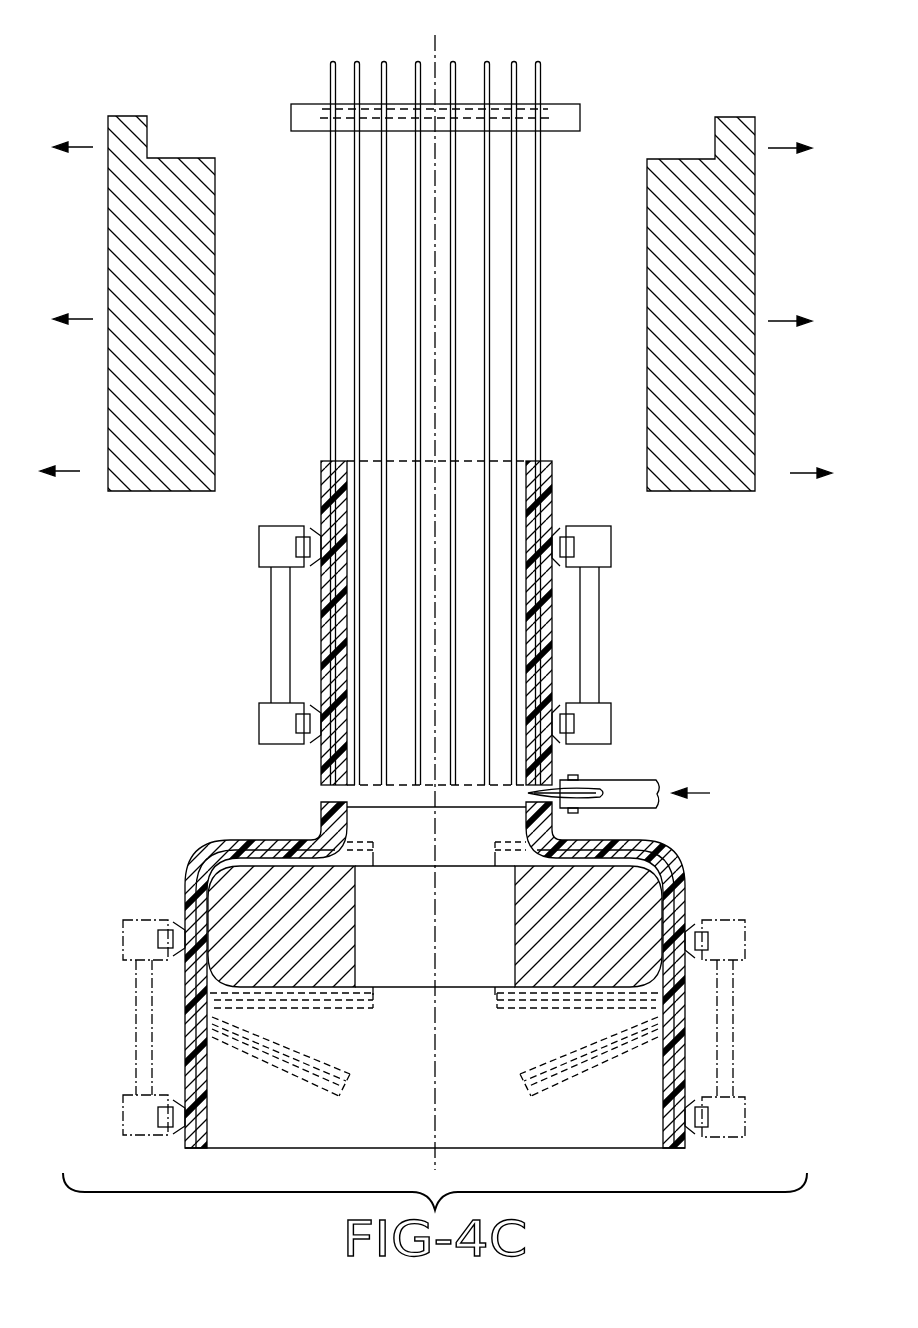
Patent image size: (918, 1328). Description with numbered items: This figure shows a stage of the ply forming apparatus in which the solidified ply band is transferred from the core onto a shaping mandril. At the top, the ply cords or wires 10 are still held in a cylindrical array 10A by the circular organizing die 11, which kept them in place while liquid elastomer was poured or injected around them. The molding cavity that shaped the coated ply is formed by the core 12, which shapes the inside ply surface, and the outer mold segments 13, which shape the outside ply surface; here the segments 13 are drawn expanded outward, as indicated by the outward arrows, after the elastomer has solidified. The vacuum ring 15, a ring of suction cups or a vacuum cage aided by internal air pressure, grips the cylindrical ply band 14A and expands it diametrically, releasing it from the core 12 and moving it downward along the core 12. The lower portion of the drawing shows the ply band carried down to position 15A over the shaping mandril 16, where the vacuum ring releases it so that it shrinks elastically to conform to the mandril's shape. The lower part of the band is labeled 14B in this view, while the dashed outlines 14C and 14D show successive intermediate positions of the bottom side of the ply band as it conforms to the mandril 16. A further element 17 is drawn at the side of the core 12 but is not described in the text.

The ply cords or wires 10 is at (467, 397).
The cylindrical array 10A is at (537, 297).
The circular organizing die 11 is at (298, 116).
The core 12 is at (357, 795).
The segments 13 is at (182, 170).
The cylindrical ply band 14A is at (548, 478).
The lower shroud section 14B is at (680, 907).
The intermediate position of ply band bottom side 14C is at (582, 1068).
The intermediate position of ply band bottom side 14D is at (315, 1009).
The vacuum ring 15 is at (279, 613).
The lowered position of vacuum ring 15A is at (135, 1050).
The shaping mandril 16 is at (238, 883).
The welding tool 17 is at (603, 793).